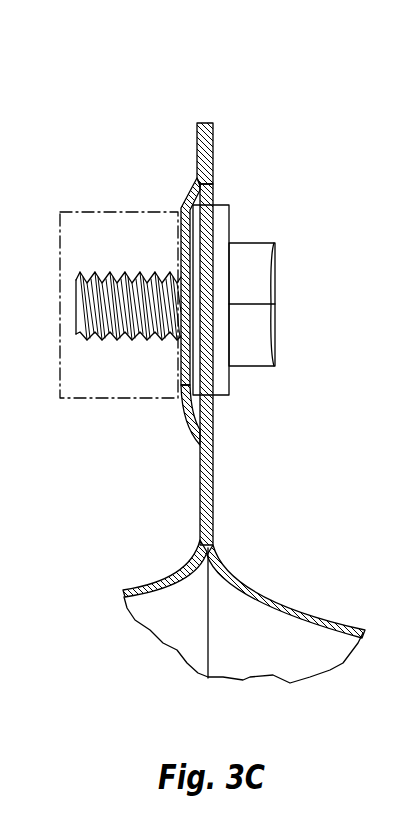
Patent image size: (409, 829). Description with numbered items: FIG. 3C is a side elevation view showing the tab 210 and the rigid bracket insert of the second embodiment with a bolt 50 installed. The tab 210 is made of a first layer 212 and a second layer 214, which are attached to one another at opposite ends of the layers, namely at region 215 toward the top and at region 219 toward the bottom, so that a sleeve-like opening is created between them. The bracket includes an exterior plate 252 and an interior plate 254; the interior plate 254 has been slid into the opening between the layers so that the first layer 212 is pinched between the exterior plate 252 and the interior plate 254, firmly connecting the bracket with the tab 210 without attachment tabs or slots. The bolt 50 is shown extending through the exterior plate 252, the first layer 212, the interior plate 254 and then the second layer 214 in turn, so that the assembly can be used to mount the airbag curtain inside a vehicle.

The tab 210 is at (257, 87).
The region 215 is at (234, 148).
The bolt 50 is at (259, 274).
The exterior plate 252 is at (229, 385).
The first layer 212 is at (217, 412).
The interior plate 254 is at (183, 388).
The second layer 214 is at (191, 420).
The region 219 is at (242, 505).